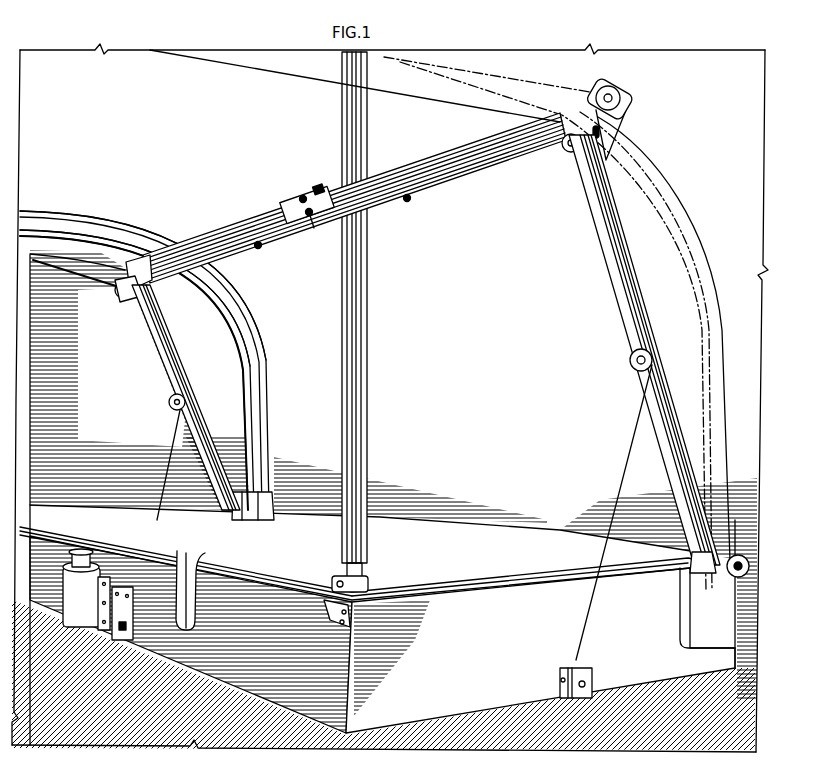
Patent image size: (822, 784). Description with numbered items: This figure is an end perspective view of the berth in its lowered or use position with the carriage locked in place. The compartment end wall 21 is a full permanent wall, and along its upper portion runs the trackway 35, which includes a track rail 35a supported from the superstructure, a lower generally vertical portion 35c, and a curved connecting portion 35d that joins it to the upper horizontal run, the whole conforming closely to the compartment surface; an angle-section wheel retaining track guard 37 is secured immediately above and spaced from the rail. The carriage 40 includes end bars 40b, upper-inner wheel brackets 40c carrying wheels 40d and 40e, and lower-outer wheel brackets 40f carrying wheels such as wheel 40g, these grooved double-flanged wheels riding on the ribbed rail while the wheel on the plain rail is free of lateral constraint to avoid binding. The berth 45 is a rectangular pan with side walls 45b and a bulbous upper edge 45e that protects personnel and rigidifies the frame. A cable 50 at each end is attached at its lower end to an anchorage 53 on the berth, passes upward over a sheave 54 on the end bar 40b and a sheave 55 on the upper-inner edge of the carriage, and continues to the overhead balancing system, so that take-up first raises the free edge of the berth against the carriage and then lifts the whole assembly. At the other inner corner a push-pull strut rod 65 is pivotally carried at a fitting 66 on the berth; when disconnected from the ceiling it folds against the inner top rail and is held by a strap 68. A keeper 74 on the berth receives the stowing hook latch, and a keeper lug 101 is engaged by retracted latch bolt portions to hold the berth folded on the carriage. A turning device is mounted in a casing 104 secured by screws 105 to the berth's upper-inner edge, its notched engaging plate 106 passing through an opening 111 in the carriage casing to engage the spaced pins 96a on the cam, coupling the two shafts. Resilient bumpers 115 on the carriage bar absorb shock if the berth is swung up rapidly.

The compartment end wall 21 is at (116, 373).
The trackway 35 is at (262, 345).
The track rail 35a is at (660, 160).
The lower vertical portion 35c is at (248, 409).
The connecting portion 35d is at (242, 364).
The wheel retaining track guard 37 is at (112, 248).
The carriage 40 is at (463, 172).
The end bar 40b is at (170, 363).
The upper-inner wheel bracket 40c is at (138, 292).
The wheel 40d is at (617, 90).
The wheel 40e is at (138, 258).
The lower-outer wheel bracket 40f is at (714, 576).
The wheel 40g is at (749, 567).
The berth 45 is at (503, 651).
The side wall 45b is at (282, 585).
The bulbous upper edge 45e is at (236, 566).
The cable 50 is at (308, 82).
The cable anchorage 53 is at (592, 674).
The sheave 54 is at (169, 403).
The sheave 55 is at (122, 299).
The push-pull strut rod 65 is at (346, 379).
The fitting 66 is at (368, 580).
The strap 68 is at (192, 590).
The keeper 74 is at (122, 613).
The pin 96a is at (329, 229).
The keeper lug 101 is at (326, 610).
The casing 104 is at (95, 606).
The screw 105 is at (108, 577).
The engaging element 106 is at (88, 552).
The opening 111 is at (318, 184).
The resilient bumper 115 is at (409, 202).